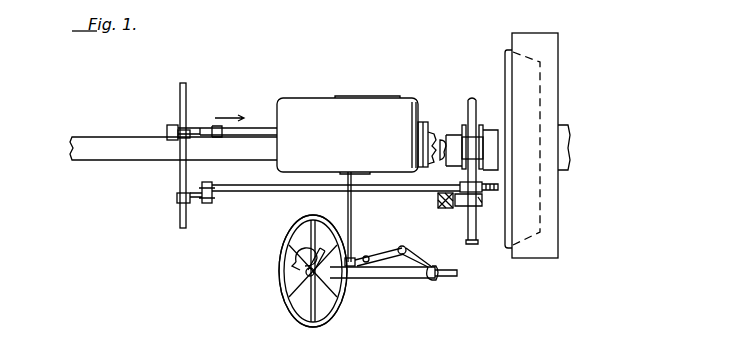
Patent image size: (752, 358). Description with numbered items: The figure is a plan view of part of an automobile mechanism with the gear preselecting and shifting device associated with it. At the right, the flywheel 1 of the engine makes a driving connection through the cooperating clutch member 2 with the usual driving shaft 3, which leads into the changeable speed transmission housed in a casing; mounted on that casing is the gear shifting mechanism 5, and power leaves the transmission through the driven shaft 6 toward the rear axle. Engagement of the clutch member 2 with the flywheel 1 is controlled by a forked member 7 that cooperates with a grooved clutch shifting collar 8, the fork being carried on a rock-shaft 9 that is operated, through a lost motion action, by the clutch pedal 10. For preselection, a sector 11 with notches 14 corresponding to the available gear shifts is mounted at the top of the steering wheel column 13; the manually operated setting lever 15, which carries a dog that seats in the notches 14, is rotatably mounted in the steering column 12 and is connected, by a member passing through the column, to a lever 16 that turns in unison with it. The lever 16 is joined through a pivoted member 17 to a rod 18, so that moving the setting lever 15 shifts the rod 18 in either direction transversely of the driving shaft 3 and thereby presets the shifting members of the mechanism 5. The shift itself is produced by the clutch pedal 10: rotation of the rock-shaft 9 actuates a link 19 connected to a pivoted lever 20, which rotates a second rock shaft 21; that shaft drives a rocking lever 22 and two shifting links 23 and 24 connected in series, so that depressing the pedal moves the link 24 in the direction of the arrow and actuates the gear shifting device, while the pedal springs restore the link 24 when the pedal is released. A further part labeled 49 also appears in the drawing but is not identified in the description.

The flywheel 1 is at (551, 250).
The clutch member 2 is at (505, 68).
The driving shaft 3 is at (438, 150).
The gear shifting mechanism 5 is at (349, 115).
The driven shaft 6 is at (108, 145).
The forked member 7 is at (470, 152).
The clutch shifting collar 8 is at (478, 125).
The rock-shaft 9 is at (474, 116).
The clutch pedal 10 is at (446, 208).
The sector 11 is at (303, 252).
The steering column 12 is at (385, 278).
The steering wheel column 13 is at (313, 232).
The notches 14 is at (342, 270).
The setting lever 15 is at (306, 272).
The lever 16 is at (416, 258).
The pivoted member 17 is at (381, 255).
The rod 18 is at (353, 220).
The link 19 is at (262, 191).
The pivoted lever 20 is at (193, 203).
The second rock shaft 21 is at (178, 214).
The rocking lever 22 is at (178, 140).
The shifting link 23 is at (192, 128).
The shifting link 24 is at (253, 128).
The collar 49 is at (422, 120).